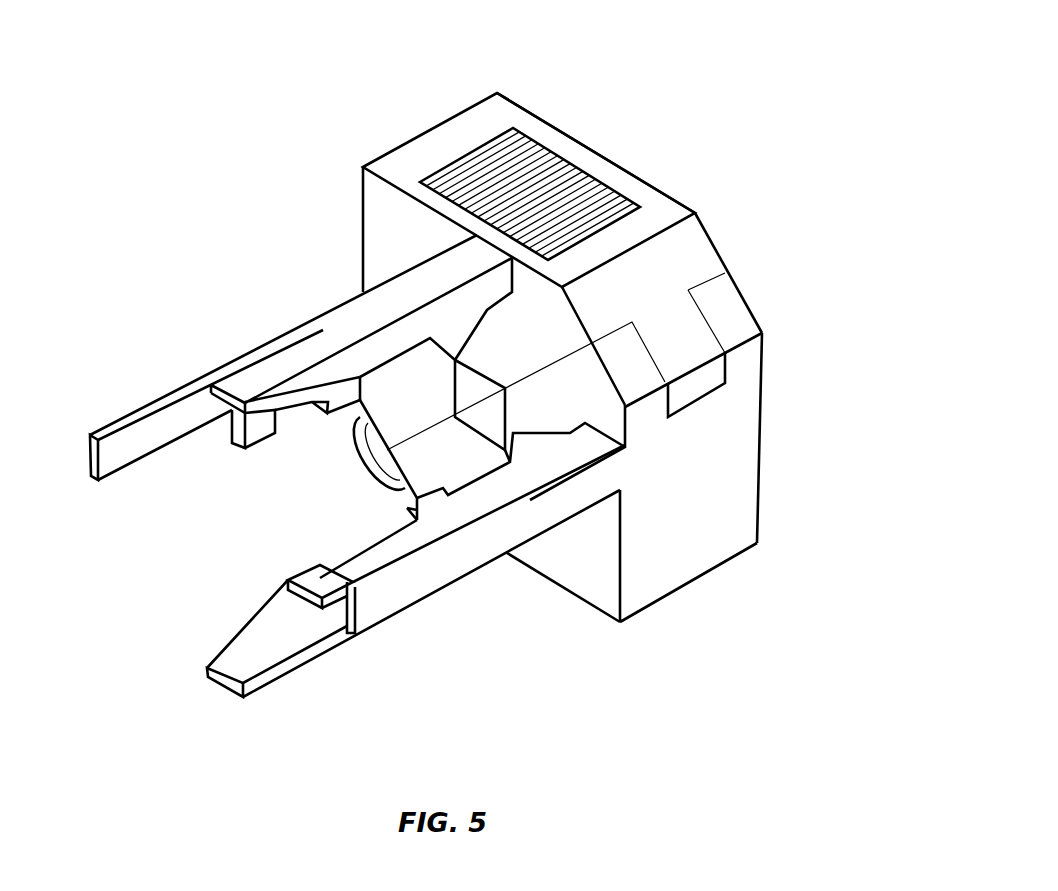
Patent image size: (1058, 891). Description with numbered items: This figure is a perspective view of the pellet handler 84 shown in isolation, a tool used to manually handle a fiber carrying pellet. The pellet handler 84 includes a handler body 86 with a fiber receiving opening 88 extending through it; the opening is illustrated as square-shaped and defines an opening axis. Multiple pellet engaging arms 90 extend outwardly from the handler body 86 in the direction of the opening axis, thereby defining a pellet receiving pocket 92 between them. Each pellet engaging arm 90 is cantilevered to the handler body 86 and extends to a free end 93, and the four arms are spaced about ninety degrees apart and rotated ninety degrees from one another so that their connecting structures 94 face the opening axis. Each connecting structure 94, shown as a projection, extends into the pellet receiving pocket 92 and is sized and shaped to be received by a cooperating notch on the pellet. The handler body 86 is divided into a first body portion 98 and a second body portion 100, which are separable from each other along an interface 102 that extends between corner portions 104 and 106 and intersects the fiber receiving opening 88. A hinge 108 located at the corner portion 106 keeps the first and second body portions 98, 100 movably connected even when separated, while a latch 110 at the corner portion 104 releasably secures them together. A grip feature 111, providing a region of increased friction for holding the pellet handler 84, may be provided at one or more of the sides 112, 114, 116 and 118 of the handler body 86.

The pellet handler 84 is at (768, 122).
The handler body 86 is at (740, 420).
The fiber receiving opening 88 is at (483, 385).
The pellet engaging arms 90 is at (322, 333).
The pellet receiving pocket 92 is at (255, 556).
The free end 93 is at (92, 453).
The connecting structure 94 is at (252, 428).
The first body portion 98 is at (503, 112).
The second body portion 100 is at (728, 523).
The interface 102 is at (543, 370).
The corner portion 104 is at (692, 247).
The corner portion 106 is at (376, 489).
The hinge 108 is at (360, 452).
The latch 110 is at (683, 343).
The grip feature 111 is at (573, 168).
The side 112 is at (653, 208).
The side 114 is at (687, 557).
The side 116 is at (587, 603).
The side 118 is at (363, 227).